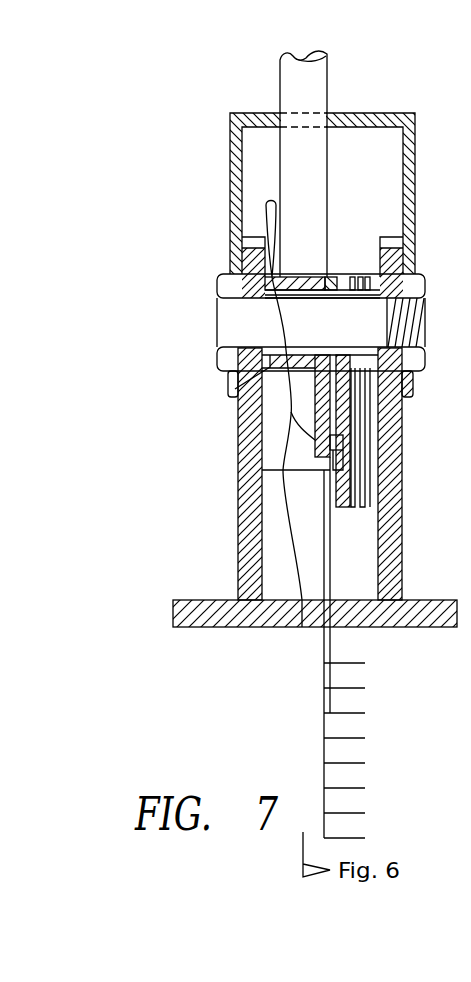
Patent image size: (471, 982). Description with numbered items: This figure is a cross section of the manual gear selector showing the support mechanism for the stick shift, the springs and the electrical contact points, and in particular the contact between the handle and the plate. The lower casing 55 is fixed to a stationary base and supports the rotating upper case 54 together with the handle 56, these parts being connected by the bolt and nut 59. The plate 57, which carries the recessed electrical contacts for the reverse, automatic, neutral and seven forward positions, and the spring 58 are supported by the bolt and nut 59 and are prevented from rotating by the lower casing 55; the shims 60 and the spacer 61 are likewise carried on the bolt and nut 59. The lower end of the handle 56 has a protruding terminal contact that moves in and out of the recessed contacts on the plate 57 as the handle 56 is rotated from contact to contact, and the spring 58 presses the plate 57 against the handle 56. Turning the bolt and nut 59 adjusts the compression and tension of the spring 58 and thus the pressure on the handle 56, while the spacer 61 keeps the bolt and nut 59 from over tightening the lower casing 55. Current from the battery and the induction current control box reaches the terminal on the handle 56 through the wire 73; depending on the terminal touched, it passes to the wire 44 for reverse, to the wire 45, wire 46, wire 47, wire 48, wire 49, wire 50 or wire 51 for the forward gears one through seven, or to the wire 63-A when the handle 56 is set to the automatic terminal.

The upper case 54 is at (225, 175).
The handle 56 is at (331, 183).
The bolt and nut 59 is at (213, 313).
The spacer 61 is at (297, 300).
The shims 60 is at (235, 389).
The lower casing 55 is at (236, 487).
The plate 57 is at (341, 508).
The spring 58 is at (364, 509).
The wire 73 is at (302, 627).
The wire 63-A is at (321, 640).
The wire 44 is at (374, 837).
The wire 45 is at (370, 812).
The wire 46 is at (374, 787).
The wire 47 is at (378, 762).
The wire 48 is at (377, 737).
The wire 49 is at (373, 712).
The wire 50 is at (377, 687).
The wire 51 is at (381, 662).